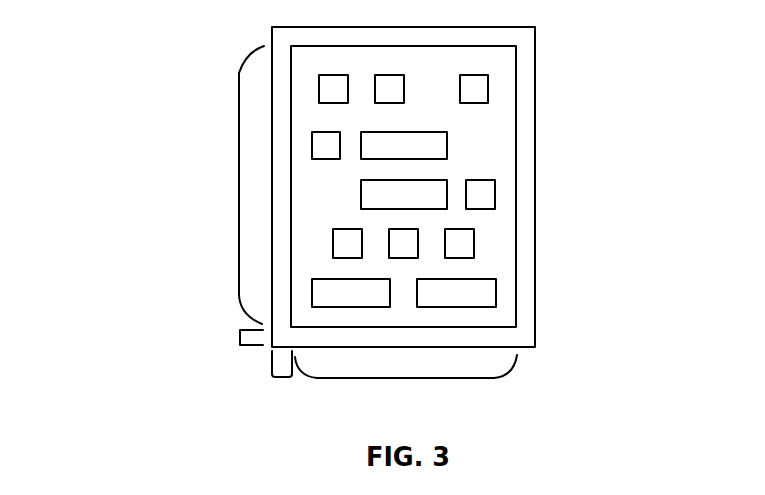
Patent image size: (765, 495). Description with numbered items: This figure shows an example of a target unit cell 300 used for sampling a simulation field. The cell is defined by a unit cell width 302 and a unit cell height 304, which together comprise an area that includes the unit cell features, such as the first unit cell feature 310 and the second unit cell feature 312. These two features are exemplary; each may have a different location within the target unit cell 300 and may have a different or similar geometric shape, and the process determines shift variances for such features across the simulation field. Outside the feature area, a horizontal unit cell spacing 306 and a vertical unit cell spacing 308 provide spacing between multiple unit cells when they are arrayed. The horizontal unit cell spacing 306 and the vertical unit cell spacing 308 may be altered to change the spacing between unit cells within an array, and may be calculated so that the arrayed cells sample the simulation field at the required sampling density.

The target unit cell 300 is at (112, 52).
The unit cell width 302 is at (405, 378).
The unit cell height 304 is at (239, 185).
The horizontal unit cell spacing 306 is at (282, 377).
The vertical unit cell spacing 308 is at (240, 337).
The first unit cell feature 310 is at (488, 90).
The second unit cell feature 312 is at (447, 145).